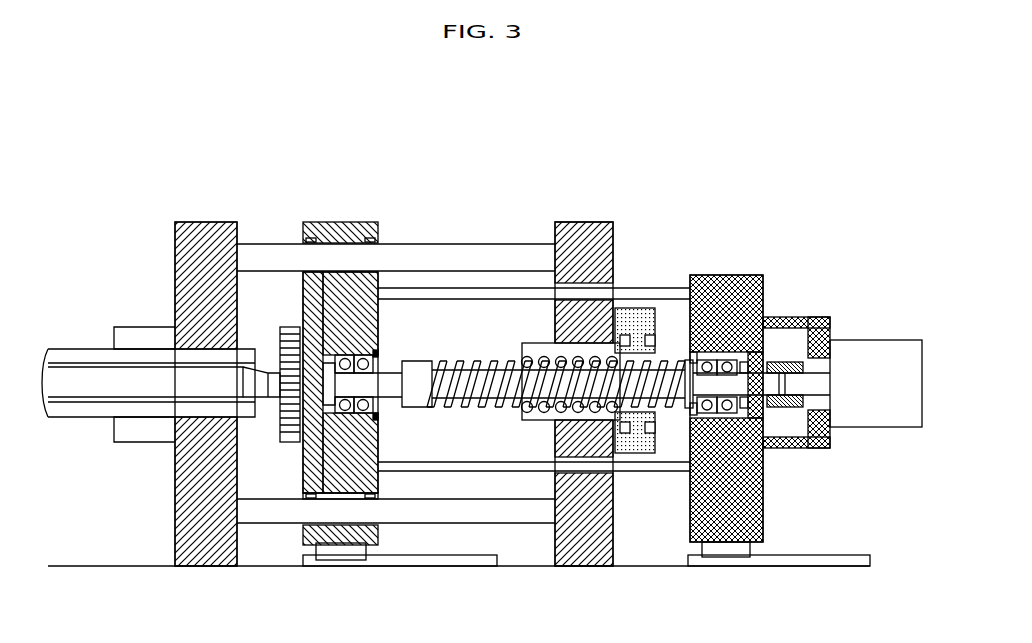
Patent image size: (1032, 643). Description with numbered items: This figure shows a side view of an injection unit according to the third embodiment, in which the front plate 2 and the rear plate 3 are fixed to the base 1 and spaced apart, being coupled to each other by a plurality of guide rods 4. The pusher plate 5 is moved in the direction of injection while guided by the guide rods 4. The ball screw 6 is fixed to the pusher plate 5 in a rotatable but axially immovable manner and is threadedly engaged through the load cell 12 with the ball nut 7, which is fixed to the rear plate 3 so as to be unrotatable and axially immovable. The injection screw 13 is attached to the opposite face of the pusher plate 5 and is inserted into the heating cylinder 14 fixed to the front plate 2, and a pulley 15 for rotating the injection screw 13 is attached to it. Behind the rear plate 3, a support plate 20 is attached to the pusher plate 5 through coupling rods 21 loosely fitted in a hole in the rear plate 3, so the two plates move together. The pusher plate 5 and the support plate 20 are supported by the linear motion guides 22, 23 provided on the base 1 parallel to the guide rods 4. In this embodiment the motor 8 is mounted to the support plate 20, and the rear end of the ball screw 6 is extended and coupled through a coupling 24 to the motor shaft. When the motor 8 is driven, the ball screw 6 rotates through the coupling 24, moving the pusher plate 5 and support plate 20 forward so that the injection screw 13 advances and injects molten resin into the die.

The base 1 is at (93, 566).
The front plate 2 is at (175, 472).
The rear plate 3 is at (575, 222).
The guide rods 4 is at (463, 245).
The pusher plate 5 is at (344, 222).
The ball screw 6 is at (497, 360).
The ball nut 7 is at (532, 424).
The injection motor 8 is at (860, 340).
The load cell 12 is at (643, 308).
The injection screw 13 is at (160, 378).
The heating cylinder 14 is at (92, 352).
The pulley 15 is at (283, 327).
The support plate 20 is at (728, 275).
The coupling rods 21 is at (645, 471).
The linear motion guide 22 is at (340, 560).
The linear motion guide 23 is at (727, 557).
The coupling 24 is at (783, 408).